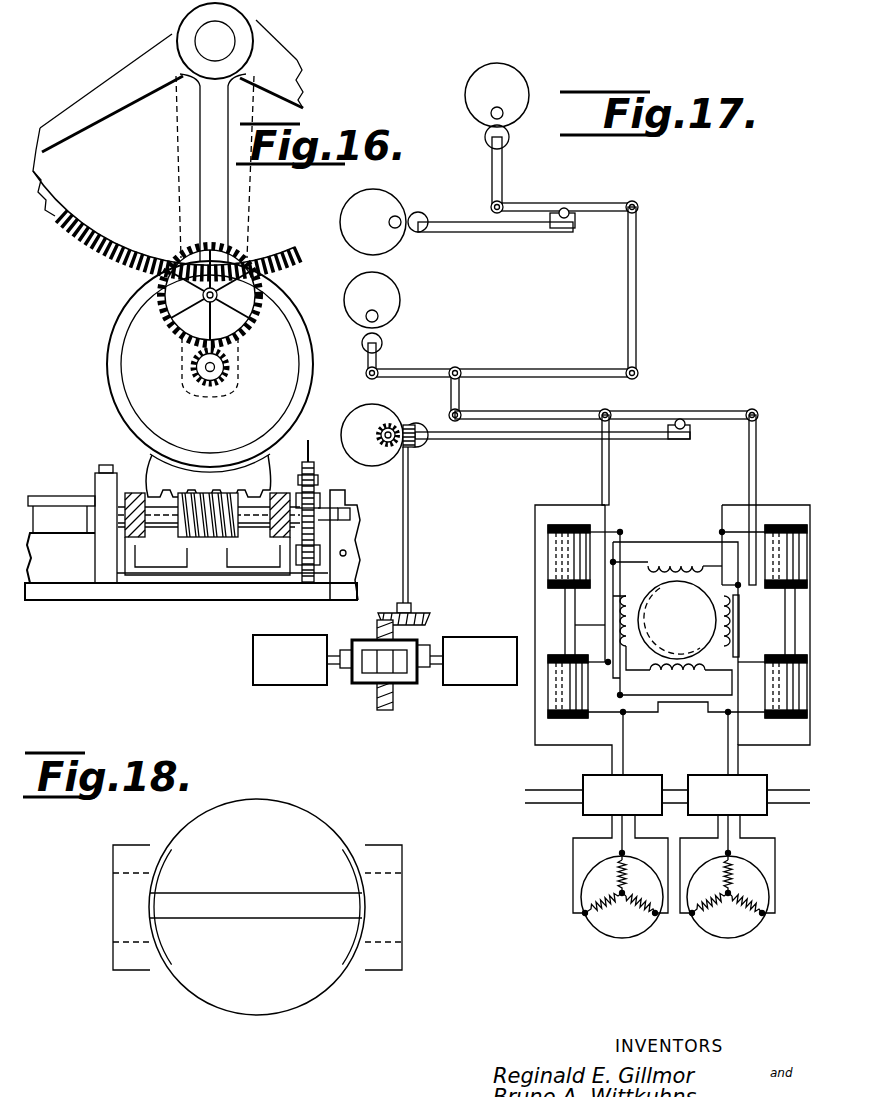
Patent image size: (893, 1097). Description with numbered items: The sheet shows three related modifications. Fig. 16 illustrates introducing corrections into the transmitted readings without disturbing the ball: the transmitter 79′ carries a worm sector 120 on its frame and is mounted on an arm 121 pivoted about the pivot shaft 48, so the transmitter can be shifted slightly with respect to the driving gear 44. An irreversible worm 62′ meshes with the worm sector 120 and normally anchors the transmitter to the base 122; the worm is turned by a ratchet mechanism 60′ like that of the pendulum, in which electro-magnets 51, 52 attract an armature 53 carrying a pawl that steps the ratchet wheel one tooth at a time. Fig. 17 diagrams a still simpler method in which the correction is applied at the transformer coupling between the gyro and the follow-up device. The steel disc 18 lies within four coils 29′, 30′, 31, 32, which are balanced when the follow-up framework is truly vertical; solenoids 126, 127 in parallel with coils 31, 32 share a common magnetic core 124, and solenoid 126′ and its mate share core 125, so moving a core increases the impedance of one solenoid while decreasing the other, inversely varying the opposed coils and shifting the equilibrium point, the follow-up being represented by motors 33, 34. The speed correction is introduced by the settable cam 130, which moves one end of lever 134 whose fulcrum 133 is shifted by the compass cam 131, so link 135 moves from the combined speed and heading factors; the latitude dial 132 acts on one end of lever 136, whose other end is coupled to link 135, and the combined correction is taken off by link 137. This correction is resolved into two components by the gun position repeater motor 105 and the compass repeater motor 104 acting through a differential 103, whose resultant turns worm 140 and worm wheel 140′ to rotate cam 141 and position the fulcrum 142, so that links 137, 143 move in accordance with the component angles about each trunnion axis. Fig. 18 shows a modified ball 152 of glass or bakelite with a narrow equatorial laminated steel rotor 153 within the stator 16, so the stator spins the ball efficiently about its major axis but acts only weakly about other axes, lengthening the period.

In FIG. 16, the pivot 48 is at (205, 40).
In FIG. 16, the arm 121 is at (174, 170).
In FIG. 16, the driving gear 44 is at (166, 233).
In FIG. 16, the transmitter 79′ is at (210, 356).
In FIG. 16, the worm sector 120 is at (166, 483).
In FIG. 16, the base 122 is at (150, 597).
In FIG. 16, the electro-magnet 51 is at (61, 558).
In FIG. 16, the irreversible worm 62′ is at (209, 525).
In FIG. 16, the ratchet mechanism 60′ is at (317, 507).
In FIG. 16, the electro-magnet 52 is at (352, 545).
In FIG. 16, the armature 53 is at (350, 510).
In FIG. 17, the settable cam 130 is at (522, 108).
In FIG. 17, the compass cam 131 is at (390, 245).
In FIG. 17, the latitude dial 132 is at (395, 323).
In FIG. 17, the fulcrum 133 is at (565, 218).
In FIG. 17, the lever 134 is at (612, 206).
In FIG. 17, the link 135 is at (637, 273).
In FIG. 17, the lever 136 is at (535, 373).
In FIG. 17, the link 137 is at (460, 397).
In FIG. 17, the link bar 143 is at (557, 413).
In FIG. 17, the fulcrum 142 is at (681, 419).
In FIG. 17, the cam 141 is at (358, 409).
In FIG. 17, the worm wheel 140′ is at (388, 422).
In FIG. 17, the worm 140 is at (403, 425).
In FIG. 17, the differential 103 is at (368, 686).
In FIG. 17, the gun position repeater motor 105 is at (255, 690).
In FIG. 17, the compass repeater motor 104 is at (510, 690).
In FIG. 17, the solenoid 126 is at (553, 548).
In FIG. 17, the common magnetic core 124 is at (563, 600).
In FIG. 17, the solenoid 127 is at (556, 712).
In FIG. 17, the solenoid 126′ is at (765, 640).
In FIG. 17, the common magnetic core 125 is at (786, 640).
In FIG. 17, the steel disc 18 is at (675, 638).
In FIG. 17, the coil 29′ is at (667, 555).
In FIG. 17, the coil 30′ is at (677, 684).
In FIG. 17, the coil 31 is at (631, 637).
In FIG. 17, the coil 32 is at (721, 636).
In FIG. 17, the motor 33 is at (617, 934).
In FIG. 17, the motor 34 is at (760, 942).
In FIG. 18, the ball 152 is at (253, 1008).
In FIG. 18, the stator 16 is at (403, 906).
In FIG. 18, the laminated steel rotor 153 is at (220, 903).